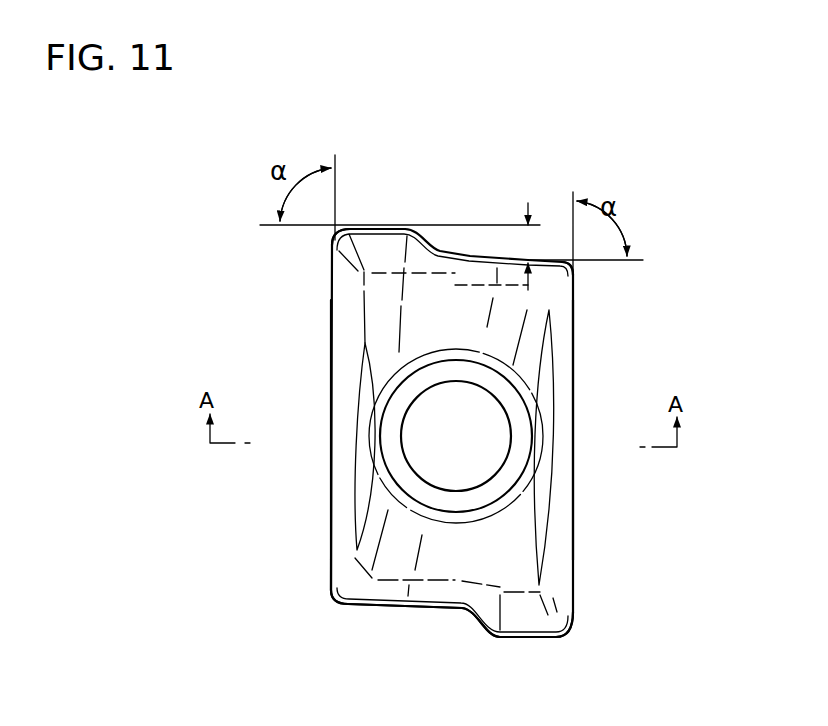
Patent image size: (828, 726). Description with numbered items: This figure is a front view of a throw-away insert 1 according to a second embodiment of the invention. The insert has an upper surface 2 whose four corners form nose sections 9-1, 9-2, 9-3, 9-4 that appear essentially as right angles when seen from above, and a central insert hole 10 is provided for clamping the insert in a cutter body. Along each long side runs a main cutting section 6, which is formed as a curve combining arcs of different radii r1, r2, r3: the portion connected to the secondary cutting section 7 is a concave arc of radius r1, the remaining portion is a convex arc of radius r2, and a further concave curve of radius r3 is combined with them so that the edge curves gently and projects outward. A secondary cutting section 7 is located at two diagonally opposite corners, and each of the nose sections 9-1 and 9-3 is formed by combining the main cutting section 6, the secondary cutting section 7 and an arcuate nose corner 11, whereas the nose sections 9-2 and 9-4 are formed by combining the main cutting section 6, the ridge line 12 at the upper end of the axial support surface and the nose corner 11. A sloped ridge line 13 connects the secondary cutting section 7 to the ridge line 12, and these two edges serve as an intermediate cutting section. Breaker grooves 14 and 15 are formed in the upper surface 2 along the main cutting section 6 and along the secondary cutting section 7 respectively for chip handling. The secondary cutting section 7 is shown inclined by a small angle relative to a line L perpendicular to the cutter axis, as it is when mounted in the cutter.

The throw-away insert 1 is at (512, 188).
The upper surface 2 is at (513, 344).
The main cutting section 6 is at (330, 469).
The secondary cutting section 7 is at (375, 226).
The nose section 9-1 is at (327, 247).
The nose section 9-2 is at (581, 274).
The nose section 9-3 is at (569, 638).
The nose section 9-4 is at (338, 608).
The insert hole 10 is at (408, 455).
The nose corner 11 is at (330, 598).
The ridge line 12 is at (392, 607).
The sloped ridge line 13 is at (470, 622).
The breaker groove 14 is at (340, 347).
The breaker groove 15 is at (388, 245).
The radius r1 is at (573, 590).
The radius r2 is at (576, 458).
The radius r3 is at (573, 275).
The line L is at (537, 243).